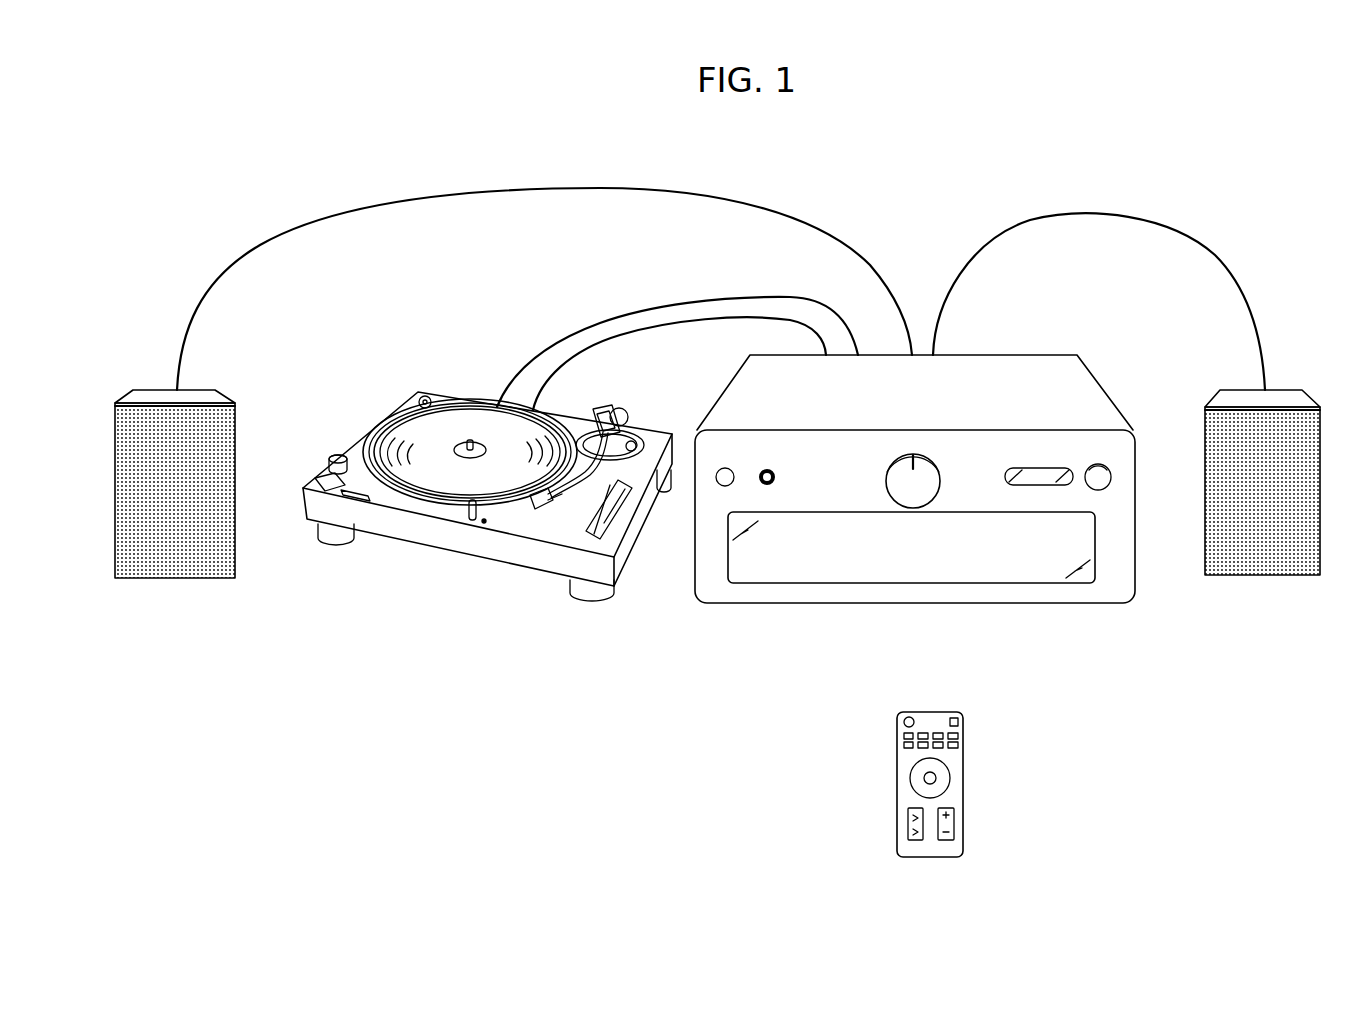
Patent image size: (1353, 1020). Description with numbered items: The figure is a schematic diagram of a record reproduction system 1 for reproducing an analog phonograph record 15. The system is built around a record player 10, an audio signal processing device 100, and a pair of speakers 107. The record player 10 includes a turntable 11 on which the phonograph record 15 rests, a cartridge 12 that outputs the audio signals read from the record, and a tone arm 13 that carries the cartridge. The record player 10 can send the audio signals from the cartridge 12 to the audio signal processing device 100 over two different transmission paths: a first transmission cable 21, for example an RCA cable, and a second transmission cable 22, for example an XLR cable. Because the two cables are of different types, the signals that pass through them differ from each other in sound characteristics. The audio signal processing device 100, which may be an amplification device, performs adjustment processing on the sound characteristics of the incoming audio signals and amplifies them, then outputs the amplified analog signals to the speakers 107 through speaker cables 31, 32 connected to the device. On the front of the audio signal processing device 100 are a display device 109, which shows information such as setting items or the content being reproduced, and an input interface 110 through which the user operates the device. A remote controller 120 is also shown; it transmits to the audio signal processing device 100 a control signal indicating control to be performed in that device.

The record reproduction system 1 is at (1240, 155).
The record player 10 is at (487, 482).
The turntable 11 is at (435, 508).
The cartridge 12 is at (547, 505).
The tone arm 13 is at (594, 478).
The phonograph record 15 is at (449, 417).
The first transmission cable 21 is at (627, 316).
The second transmission cable 22 is at (702, 323).
The speaker cable 31 is at (848, 244).
The speaker cable 32 is at (983, 240).
The audio signal processing device 100 is at (930, 449).
The speakers 107 is at (225, 392).
The display device 109 is at (1032, 468).
The input interface 110 is at (1098, 465).
The remote controller 120 is at (963, 758).